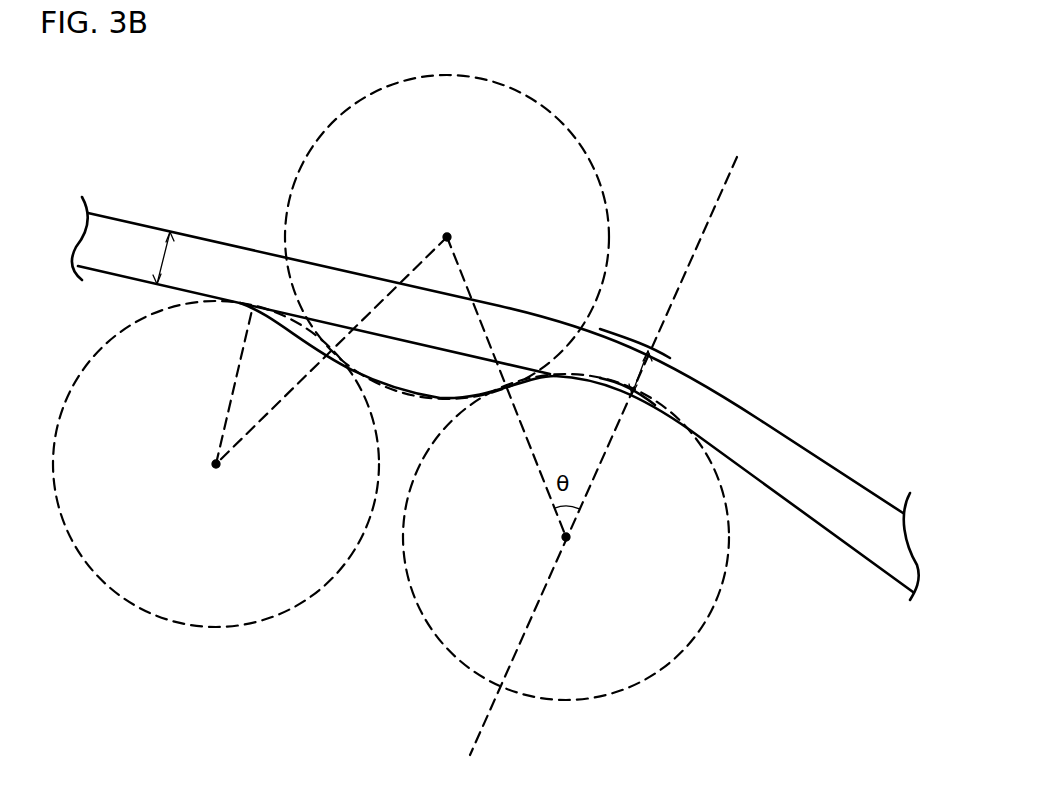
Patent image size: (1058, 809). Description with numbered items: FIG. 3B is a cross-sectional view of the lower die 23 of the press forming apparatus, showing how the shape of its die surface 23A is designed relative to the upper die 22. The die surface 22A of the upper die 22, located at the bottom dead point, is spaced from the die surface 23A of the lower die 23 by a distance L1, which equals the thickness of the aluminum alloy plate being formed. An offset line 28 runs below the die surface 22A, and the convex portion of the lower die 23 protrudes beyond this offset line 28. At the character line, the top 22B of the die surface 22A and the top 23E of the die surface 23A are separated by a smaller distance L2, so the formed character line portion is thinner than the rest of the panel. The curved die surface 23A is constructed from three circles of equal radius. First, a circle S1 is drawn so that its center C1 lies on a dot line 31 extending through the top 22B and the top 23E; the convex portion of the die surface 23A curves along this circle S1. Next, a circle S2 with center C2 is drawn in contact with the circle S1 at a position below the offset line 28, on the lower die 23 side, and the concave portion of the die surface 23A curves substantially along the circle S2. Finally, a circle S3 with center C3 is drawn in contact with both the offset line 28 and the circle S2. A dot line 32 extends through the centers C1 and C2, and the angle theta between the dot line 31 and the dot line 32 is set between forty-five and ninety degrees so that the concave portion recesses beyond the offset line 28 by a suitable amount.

The upper die 22 is at (495, 386).
The die surface of the upper die 22A is at (222, 235).
The top of the die surface of the upper die 22B is at (650, 350).
The lower die 23 is at (473, 464).
The die surface of the lower die 23A is at (107, 274).
The top of the die surface of the lower die 23E is at (634, 394).
The offset line 28 is at (400, 395).
The dot line 31 is at (710, 202).
The dot line 32 is at (483, 290).
The circle S1 is at (604, 697).
The circle S2 is at (528, 92).
The circle S3 is at (287, 611).
The center of the circle S1 C1 is at (582, 550).
The center of the circle S2 C2 is at (447, 222).
The center of the circle S3 C3 is at (213, 481).
The distance L1 is at (178, 258).
The distance L2 is at (626, 372).